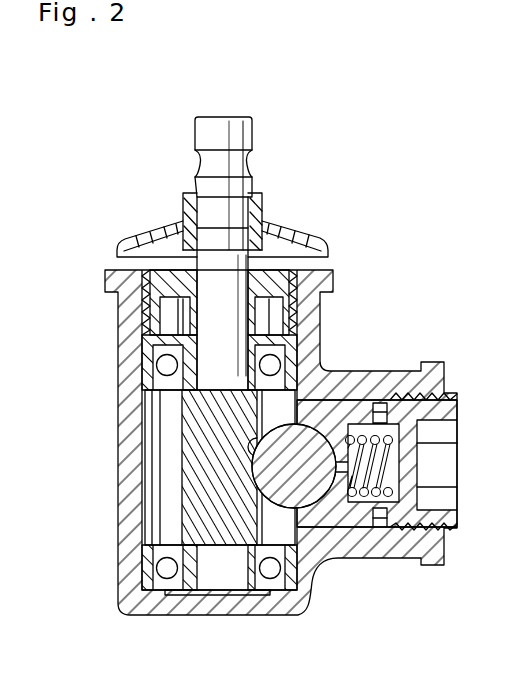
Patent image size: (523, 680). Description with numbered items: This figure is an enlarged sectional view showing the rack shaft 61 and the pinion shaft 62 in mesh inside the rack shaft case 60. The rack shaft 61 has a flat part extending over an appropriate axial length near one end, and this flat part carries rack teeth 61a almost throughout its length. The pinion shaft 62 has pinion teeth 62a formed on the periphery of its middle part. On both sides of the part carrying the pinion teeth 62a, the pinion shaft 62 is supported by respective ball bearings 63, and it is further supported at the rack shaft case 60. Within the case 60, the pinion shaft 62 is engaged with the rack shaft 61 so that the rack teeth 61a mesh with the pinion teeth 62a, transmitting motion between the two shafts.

The rack shaft case 60 is at (332, 559).
The rack shaft 61 is at (338, 400).
The rack teeth 61a is at (323, 366).
The pinion shaft 62 is at (253, 180).
The pinion teeth 62a is at (195, 471).
The ball bearings 63 is at (152, 357).